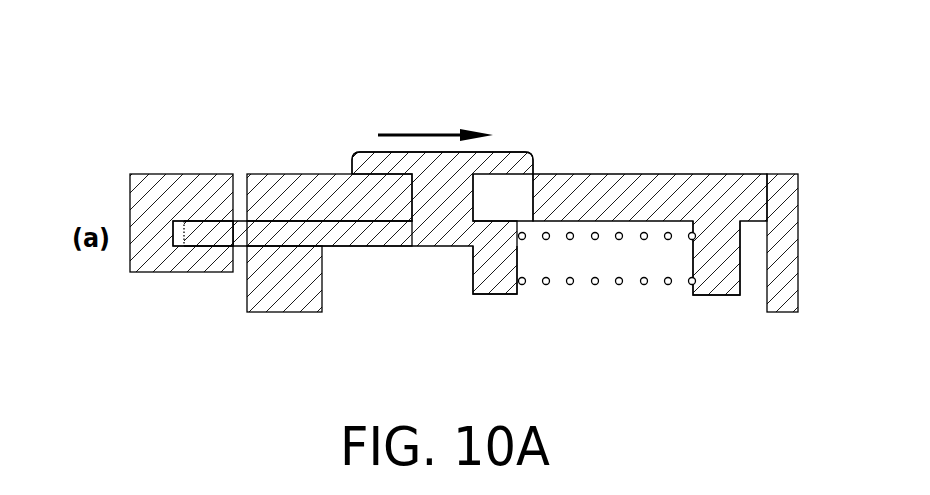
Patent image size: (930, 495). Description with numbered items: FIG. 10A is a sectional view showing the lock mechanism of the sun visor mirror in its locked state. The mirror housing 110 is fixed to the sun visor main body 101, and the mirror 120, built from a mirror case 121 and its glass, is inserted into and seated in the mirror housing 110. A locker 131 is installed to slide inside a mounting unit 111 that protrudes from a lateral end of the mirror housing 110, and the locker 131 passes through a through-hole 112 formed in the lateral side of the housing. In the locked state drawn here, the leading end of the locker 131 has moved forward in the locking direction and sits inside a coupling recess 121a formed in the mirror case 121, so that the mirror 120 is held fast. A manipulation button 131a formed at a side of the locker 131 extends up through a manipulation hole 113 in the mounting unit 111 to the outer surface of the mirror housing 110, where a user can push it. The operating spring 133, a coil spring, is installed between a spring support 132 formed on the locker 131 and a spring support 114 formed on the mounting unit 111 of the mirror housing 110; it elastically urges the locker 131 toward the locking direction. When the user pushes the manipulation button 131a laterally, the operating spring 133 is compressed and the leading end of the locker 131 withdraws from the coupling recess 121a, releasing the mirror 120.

The sun visor main body 101 is at (788, 183).
The mirror housing 110 is at (262, 175).
The mounting unit 111 is at (637, 175).
The through-hole 112 is at (275, 226).
The manipulation hole 113 is at (530, 177).
The spring support 114 is at (715, 296).
The mirror 120 is at (137, 278).
The mirror case 121 is at (167, 273).
The coupling recess 121a is at (184, 242).
The locker 131 is at (365, 247).
The manipulation button 131a is at (502, 157).
The spring support 132 is at (497, 288).
The operating spring 133 is at (618, 283).